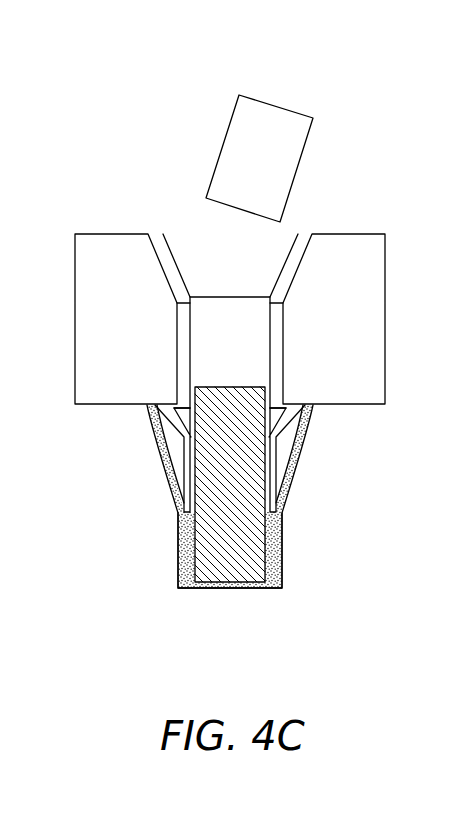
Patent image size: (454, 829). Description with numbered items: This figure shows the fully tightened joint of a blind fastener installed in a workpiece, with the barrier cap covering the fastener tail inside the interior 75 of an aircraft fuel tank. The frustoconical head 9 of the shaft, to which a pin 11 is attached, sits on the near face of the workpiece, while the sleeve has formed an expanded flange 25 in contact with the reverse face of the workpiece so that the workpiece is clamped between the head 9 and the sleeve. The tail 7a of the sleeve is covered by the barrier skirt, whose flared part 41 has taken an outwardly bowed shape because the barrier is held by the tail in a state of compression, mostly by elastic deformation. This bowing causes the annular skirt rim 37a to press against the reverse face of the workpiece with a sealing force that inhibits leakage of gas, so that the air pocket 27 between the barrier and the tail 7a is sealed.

The pin 11 is at (265, 117).
The frustoconical head 9 is at (188, 238).
The annular skirt rim 37a is at (155, 410).
The interior of the fuel tank 75 is at (116, 496).
The air pocket 27 is at (178, 443).
The expanded flange 25 is at (287, 496).
The flared part of the skirt 41 is at (310, 422).
The tail of the sleeve 7a is at (287, 483).